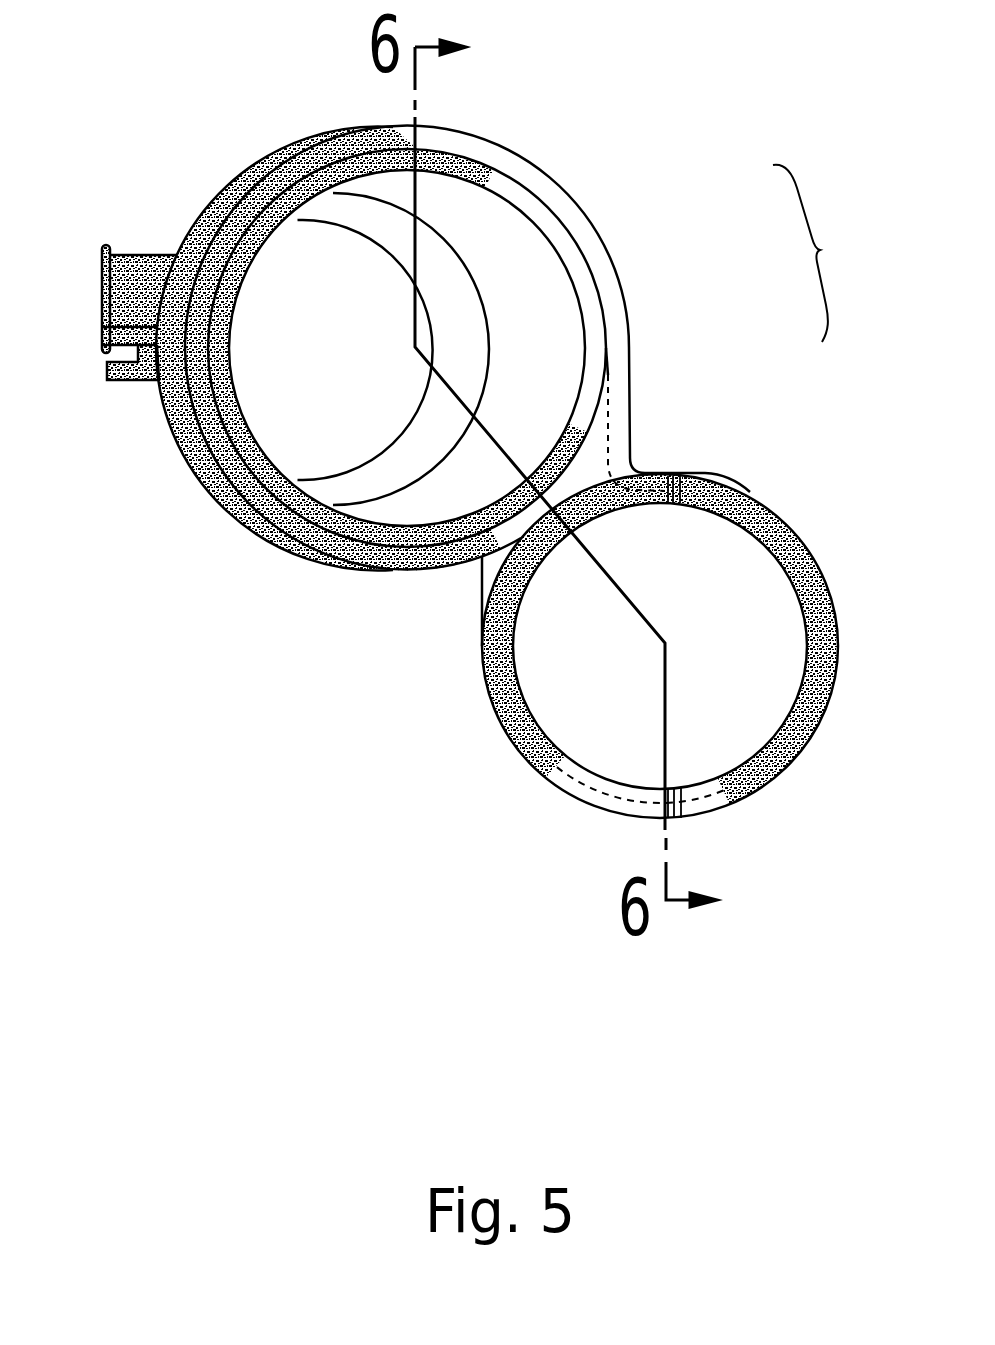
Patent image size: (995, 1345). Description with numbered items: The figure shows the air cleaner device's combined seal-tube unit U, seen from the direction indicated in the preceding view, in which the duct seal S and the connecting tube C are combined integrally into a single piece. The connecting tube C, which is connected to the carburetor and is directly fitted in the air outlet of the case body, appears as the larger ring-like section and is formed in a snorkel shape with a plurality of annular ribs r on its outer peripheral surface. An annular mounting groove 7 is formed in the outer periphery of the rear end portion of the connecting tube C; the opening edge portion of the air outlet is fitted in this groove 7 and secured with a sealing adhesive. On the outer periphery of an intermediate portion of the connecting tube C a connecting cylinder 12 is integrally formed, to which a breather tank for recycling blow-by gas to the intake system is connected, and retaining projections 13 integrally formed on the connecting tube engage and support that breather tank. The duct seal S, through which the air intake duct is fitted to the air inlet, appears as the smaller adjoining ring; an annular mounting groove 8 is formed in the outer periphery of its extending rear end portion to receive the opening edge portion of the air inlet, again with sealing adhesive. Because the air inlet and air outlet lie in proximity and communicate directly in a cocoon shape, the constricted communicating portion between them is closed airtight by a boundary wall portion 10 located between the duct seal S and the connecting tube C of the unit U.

The annular mounting groove 7 is at (318, 558).
The annular mounting groove 8 is at (847, 657).
The boundary wall portion 10 is at (518, 550).
The connecting cylinder 12 is at (133, 263).
The retaining projections 13 is at (122, 382).
The annular ribs r is at (183, 468).
The connecting tube C is at (593, 228).
The duct seal S is at (733, 490).
The seal-tube unit U is at (816, 253).